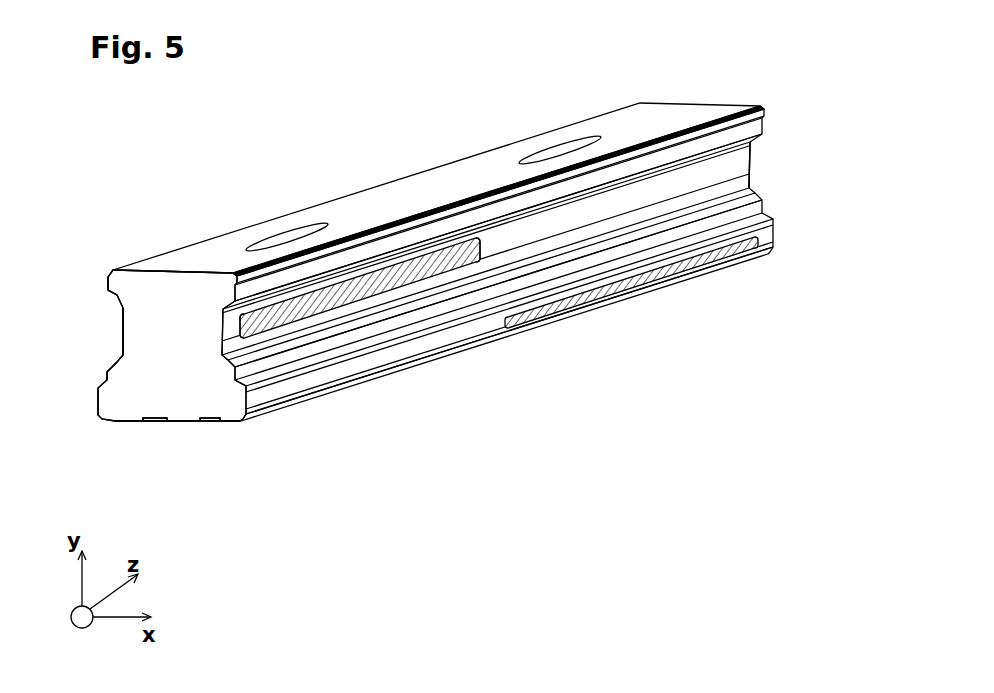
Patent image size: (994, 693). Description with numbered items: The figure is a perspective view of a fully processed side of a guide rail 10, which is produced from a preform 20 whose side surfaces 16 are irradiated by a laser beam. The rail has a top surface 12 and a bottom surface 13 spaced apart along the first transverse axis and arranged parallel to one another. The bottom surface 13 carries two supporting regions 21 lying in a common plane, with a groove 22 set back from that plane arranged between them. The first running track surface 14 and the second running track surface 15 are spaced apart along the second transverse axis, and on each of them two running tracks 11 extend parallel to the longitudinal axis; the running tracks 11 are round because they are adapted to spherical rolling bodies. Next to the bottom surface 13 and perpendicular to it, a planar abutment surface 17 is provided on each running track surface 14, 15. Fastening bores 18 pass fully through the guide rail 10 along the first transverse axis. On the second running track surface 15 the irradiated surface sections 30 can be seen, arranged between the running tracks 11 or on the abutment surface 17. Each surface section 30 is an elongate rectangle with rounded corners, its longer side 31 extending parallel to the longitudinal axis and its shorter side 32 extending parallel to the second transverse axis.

The guide rail 10 is at (155, 282).
The preform 20 is at (155, 282).
The running tracks 11 is at (758, 133).
The top surface 12 is at (428, 193).
The bottom surface 13 is at (220, 423).
The first running track surface 14 is at (123, 333).
The second running track surface 15 is at (726, 174).
The side surfaces 16 is at (123, 333).
The abutment surface 17 is at (772, 240).
The fastening bores 18 is at (288, 236).
The supporting regions 21 is at (120, 423).
The groove 22 is at (165, 423).
The irradiated surface sections 30 is at (403, 284).
The longer side 31 is at (358, 272).
The shorter side 32 is at (238, 336).